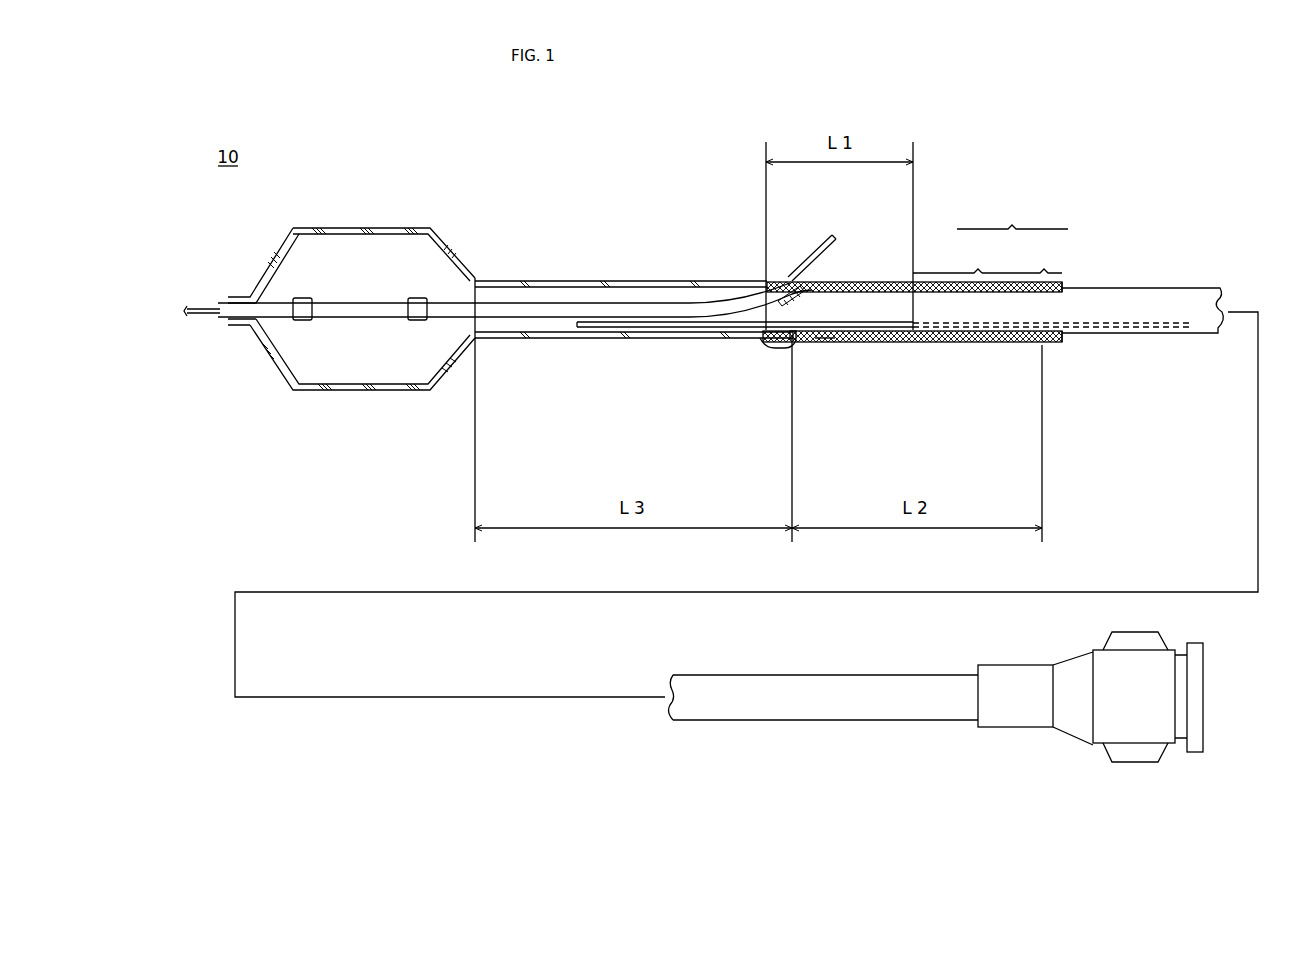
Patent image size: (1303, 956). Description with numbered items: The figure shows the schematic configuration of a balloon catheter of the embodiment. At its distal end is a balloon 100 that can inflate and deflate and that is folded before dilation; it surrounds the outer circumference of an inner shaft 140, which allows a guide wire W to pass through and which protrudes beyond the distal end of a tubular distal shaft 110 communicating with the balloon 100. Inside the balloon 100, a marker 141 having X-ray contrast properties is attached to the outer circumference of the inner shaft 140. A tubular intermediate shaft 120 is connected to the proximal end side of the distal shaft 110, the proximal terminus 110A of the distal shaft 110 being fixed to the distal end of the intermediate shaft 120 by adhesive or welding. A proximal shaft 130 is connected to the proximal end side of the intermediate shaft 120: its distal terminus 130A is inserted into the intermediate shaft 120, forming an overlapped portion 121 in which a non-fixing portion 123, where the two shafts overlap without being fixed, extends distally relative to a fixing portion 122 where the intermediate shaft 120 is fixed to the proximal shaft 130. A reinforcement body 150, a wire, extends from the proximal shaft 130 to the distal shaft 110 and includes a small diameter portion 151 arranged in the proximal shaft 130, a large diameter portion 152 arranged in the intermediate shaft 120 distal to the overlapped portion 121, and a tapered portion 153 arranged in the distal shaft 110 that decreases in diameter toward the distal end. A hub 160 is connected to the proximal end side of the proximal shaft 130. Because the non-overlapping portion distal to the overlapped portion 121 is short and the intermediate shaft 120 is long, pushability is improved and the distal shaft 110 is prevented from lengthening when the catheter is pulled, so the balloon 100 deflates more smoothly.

The balloon 100 is at (356, 227).
The distal shaft 110 is at (595, 339).
The proximal terminus 110A is at (797, 343).
The intermediate shaft 120 is at (880, 346).
The overlapped portion 121 is at (1012, 215).
The fixing portion 122 is at (1024, 256).
The non-fixing portion 123 is at (951, 256).
The proximal shaft 130 is at (1136, 286).
The distal terminus 130A is at (897, 343).
The inner shaft 140 is at (590, 300).
The marker 141 is at (302, 297).
The reinforcement body 150 is at (866, 318).
The small diameter portion 151 is at (1083, 336).
The large diameter portion 152 is at (828, 342).
The tapered portion 153 is at (742, 341).
The hub 160 is at (1127, 720).
The guide wire W is at (214, 320).